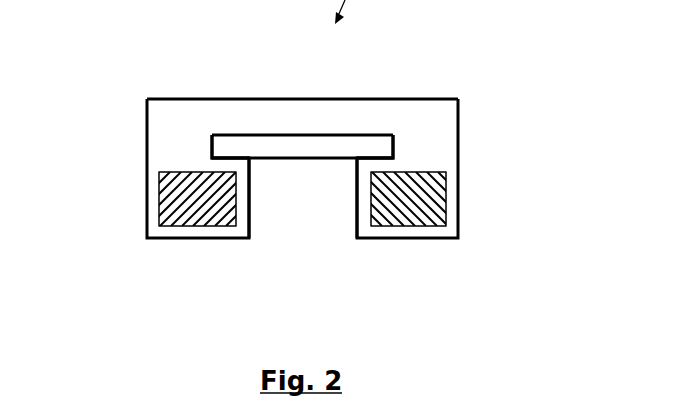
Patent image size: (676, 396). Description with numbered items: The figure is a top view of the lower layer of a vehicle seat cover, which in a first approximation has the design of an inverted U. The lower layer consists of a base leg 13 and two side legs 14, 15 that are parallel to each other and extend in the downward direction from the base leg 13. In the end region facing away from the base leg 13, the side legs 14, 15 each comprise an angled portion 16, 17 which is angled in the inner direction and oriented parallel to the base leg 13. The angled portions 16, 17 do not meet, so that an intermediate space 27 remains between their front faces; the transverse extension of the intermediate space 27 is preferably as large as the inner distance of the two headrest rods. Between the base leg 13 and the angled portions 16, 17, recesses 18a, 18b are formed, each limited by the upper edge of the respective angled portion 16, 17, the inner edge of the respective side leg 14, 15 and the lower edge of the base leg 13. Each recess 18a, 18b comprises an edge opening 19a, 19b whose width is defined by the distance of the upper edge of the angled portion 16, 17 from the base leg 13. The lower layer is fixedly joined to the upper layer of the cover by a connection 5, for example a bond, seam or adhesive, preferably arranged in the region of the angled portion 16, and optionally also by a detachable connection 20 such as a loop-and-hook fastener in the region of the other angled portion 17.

The connection 5 is at (166, 210).
The base leg 13 is at (297, 118).
The side leg 14 is at (168, 156).
The side leg 15 is at (435, 151).
The angled portion 16 is at (213, 230).
The angled portion 17 is at (425, 230).
The recess 18a is at (227, 148).
The recess 18b is at (380, 148).
The edge opening 19a is at (247, 150).
The edge opening 19b is at (357, 148).
The detachable connection 20 is at (436, 210).
The intermediate space 27 is at (317, 230).